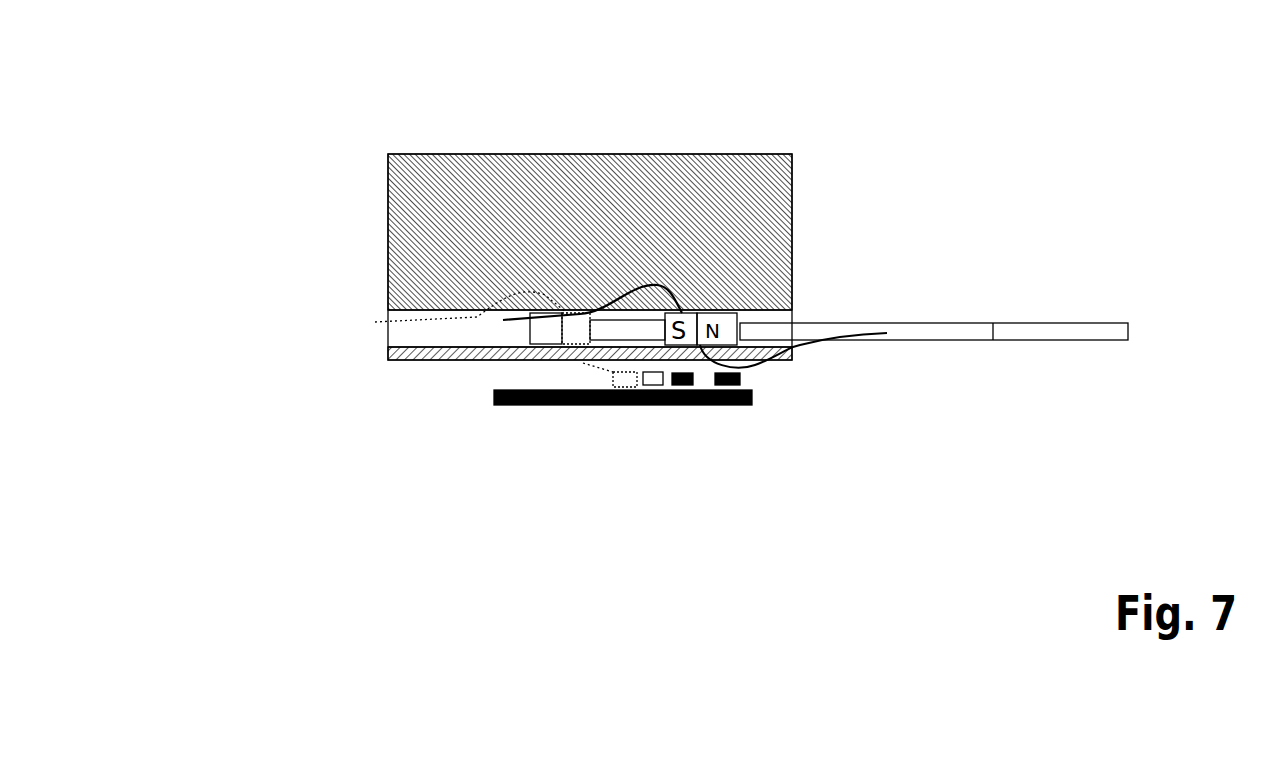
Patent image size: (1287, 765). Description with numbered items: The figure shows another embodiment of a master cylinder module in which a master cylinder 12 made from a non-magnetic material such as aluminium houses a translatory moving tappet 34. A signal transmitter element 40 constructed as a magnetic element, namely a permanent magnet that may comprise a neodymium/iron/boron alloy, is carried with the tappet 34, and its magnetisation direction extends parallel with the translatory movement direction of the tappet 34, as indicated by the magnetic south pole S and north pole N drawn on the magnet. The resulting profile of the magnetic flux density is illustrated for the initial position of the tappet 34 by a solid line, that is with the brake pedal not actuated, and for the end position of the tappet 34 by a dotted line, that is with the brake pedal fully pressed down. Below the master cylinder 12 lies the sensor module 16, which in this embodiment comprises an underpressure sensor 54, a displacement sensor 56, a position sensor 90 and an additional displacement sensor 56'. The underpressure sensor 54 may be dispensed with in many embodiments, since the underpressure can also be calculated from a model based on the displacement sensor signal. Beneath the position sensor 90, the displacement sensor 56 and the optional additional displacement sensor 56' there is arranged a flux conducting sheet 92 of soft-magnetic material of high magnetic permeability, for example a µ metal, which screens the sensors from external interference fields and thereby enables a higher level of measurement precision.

The master cylinder 12 is at (372, 152).
The tappet 34 is at (1022, 333).
The signal transmitter element 40 is at (733, 310).
The flux conducting sheet 92 is at (517, 405).
The underpressure sensor 54 is at (605, 405).
The additional displacement sensor 56' is at (608, 450).
The position sensor 90 is at (682, 405).
The displacement sensor 56 is at (708, 451).
The sensor module 16 is at (768, 393).